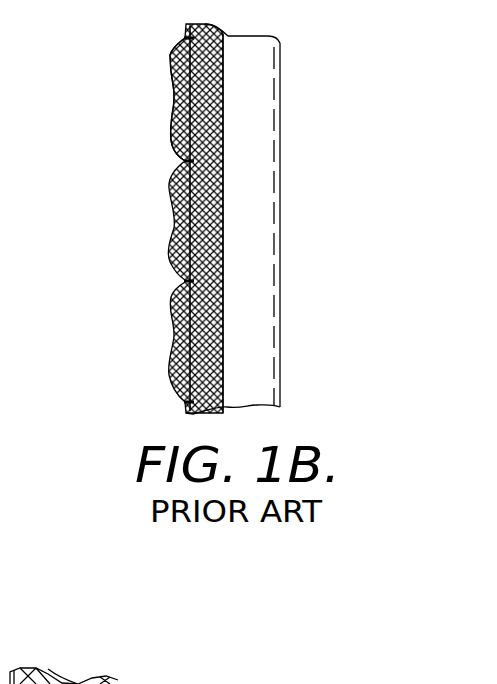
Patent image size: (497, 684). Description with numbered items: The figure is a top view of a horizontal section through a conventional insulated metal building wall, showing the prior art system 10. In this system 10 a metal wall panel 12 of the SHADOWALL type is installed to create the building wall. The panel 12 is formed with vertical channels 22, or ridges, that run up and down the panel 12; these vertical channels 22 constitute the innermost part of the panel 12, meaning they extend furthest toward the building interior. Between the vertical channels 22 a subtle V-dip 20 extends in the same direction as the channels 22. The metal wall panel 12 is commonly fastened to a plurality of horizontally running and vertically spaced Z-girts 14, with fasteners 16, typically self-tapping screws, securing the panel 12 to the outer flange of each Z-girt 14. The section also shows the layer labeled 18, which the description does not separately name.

The conventional system 10 is at (50, 224).
The metal wall panel 12 is at (173, 256).
The Z-girt 14 is at (277, 314).
The fasteners 16 is at (224, 269).
The intermediate layer 18 is at (224, 300).
The V-dip 20 is at (172, 57).
The vertical channels 22 is at (185, 160).